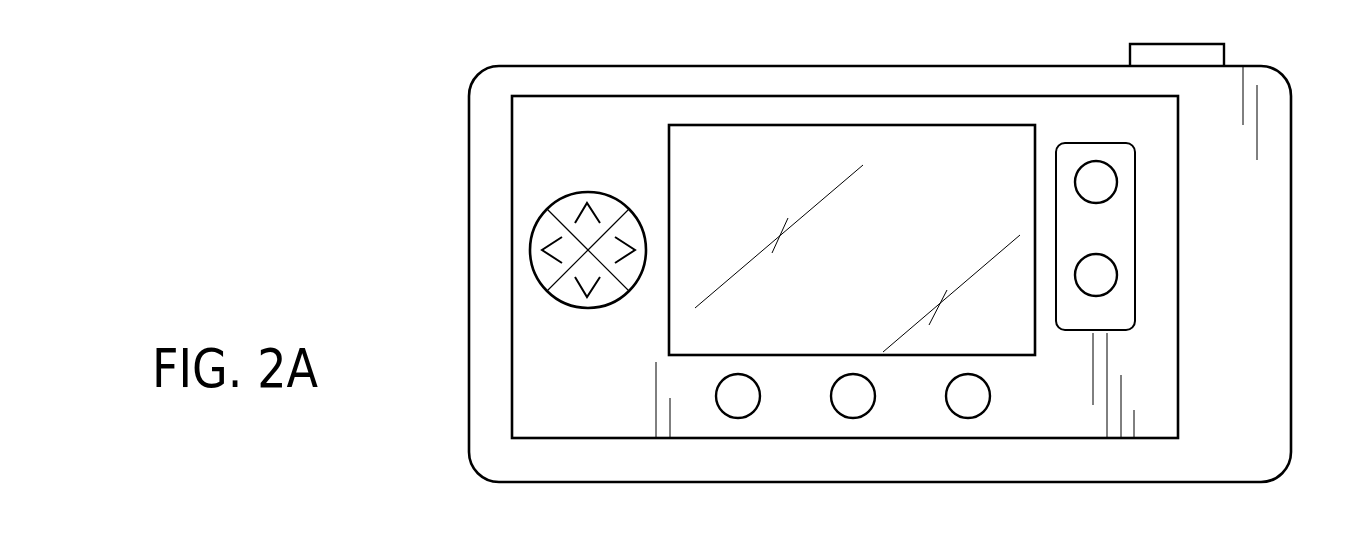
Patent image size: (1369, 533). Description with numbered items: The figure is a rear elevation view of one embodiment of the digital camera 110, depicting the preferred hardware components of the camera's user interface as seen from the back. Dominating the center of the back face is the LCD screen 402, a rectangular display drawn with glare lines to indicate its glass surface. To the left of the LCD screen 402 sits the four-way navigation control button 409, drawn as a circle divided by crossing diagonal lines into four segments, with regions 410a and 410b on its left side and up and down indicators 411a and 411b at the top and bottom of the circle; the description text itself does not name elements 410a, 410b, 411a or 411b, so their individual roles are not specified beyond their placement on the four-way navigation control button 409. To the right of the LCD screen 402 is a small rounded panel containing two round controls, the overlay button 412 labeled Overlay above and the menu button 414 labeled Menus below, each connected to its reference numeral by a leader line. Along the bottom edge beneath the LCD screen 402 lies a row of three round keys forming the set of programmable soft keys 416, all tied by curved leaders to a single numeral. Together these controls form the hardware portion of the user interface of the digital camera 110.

The digital camera 110 is at (256, 280).
The LCD screen 402 is at (880, 250).
The four-way navigation control button 409 is at (553, 184).
The directional segment 410a is at (545, 272).
The directional segment 410b is at (545, 216).
The up arrow indicator 411a is at (609, 206).
The down arrow indicator 411b is at (607, 297).
The overlay button 412 is at (1117, 182).
The menu button 414 is at (1117, 275).
The programmable soft keys 416 is at (967, 418).